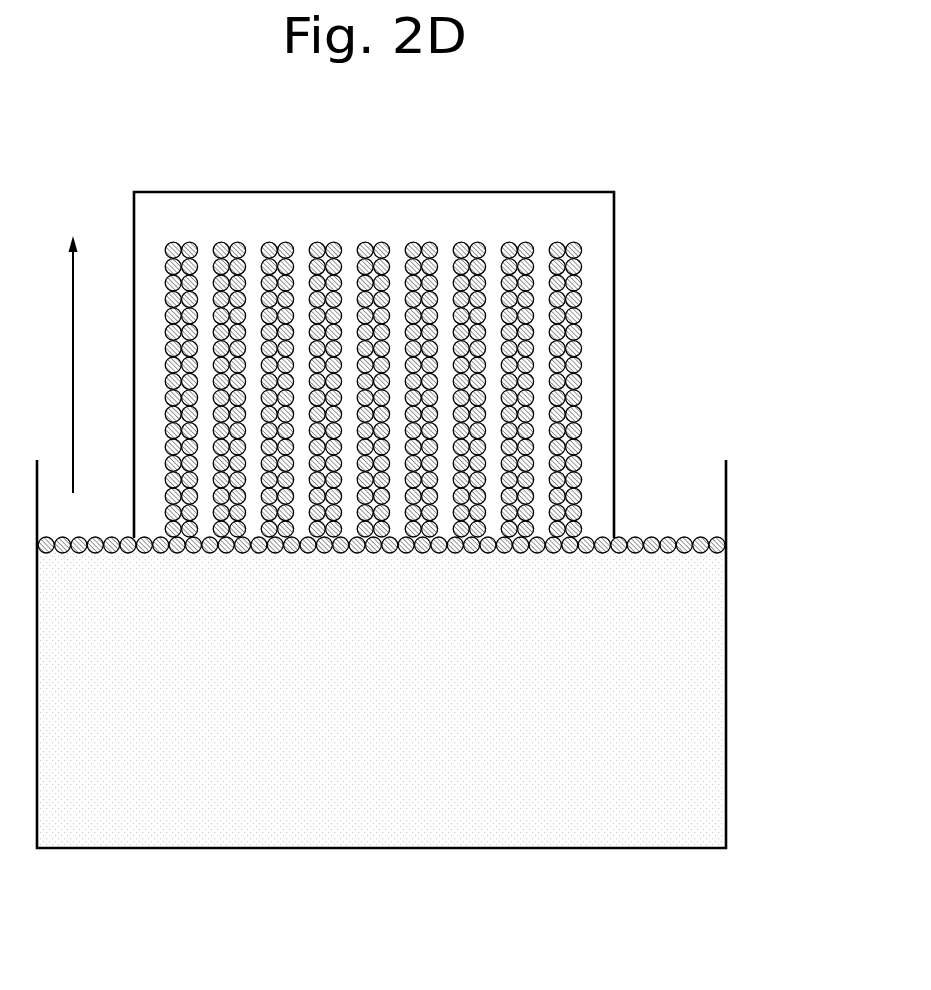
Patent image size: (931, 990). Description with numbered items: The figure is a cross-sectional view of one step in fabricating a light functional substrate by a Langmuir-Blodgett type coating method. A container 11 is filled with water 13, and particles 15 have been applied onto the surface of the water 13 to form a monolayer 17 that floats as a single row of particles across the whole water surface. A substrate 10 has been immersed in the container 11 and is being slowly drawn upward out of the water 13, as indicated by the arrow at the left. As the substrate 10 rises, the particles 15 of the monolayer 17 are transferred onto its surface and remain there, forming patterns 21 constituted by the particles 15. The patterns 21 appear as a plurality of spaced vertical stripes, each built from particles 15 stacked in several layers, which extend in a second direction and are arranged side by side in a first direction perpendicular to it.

The substrate 10 is at (600, 347).
The container 11 is at (728, 752).
The water 13 is at (712, 683).
The particles 15 is at (583, 248).
The monolayer 17 is at (658, 527).
The patterns 21 is at (565, 236).